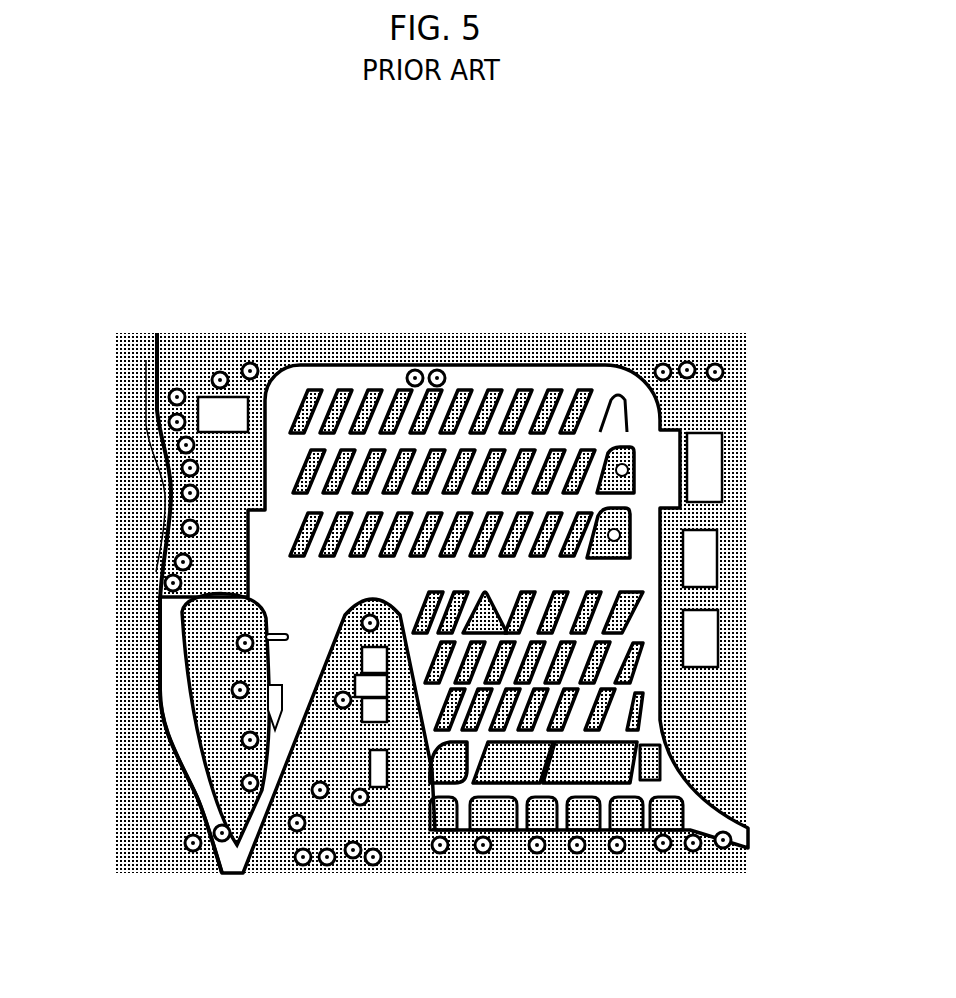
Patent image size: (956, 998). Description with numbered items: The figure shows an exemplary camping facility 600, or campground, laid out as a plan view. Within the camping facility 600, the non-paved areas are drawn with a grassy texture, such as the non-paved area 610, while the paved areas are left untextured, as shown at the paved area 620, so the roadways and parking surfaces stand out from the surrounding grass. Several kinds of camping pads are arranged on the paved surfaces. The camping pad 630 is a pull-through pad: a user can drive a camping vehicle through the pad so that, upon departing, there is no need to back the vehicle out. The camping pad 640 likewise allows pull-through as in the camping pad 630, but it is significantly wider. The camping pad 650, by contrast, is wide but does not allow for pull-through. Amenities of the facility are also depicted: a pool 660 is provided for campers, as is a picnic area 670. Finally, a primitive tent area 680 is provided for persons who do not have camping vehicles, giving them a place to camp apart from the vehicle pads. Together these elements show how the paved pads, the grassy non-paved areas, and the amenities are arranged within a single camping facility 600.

The camping facility 600 is at (553, 232).
The non-paved area 610 is at (730, 334).
The paved area 620 is at (650, 417).
The camping pad 630 is at (553, 393).
The camping pad 640 is at (640, 622).
The camping pad 650 is at (548, 817).
The pool 660 is at (380, 767).
The picnic area 670 is at (230, 410).
The primitive tent area 680 is at (198, 640).